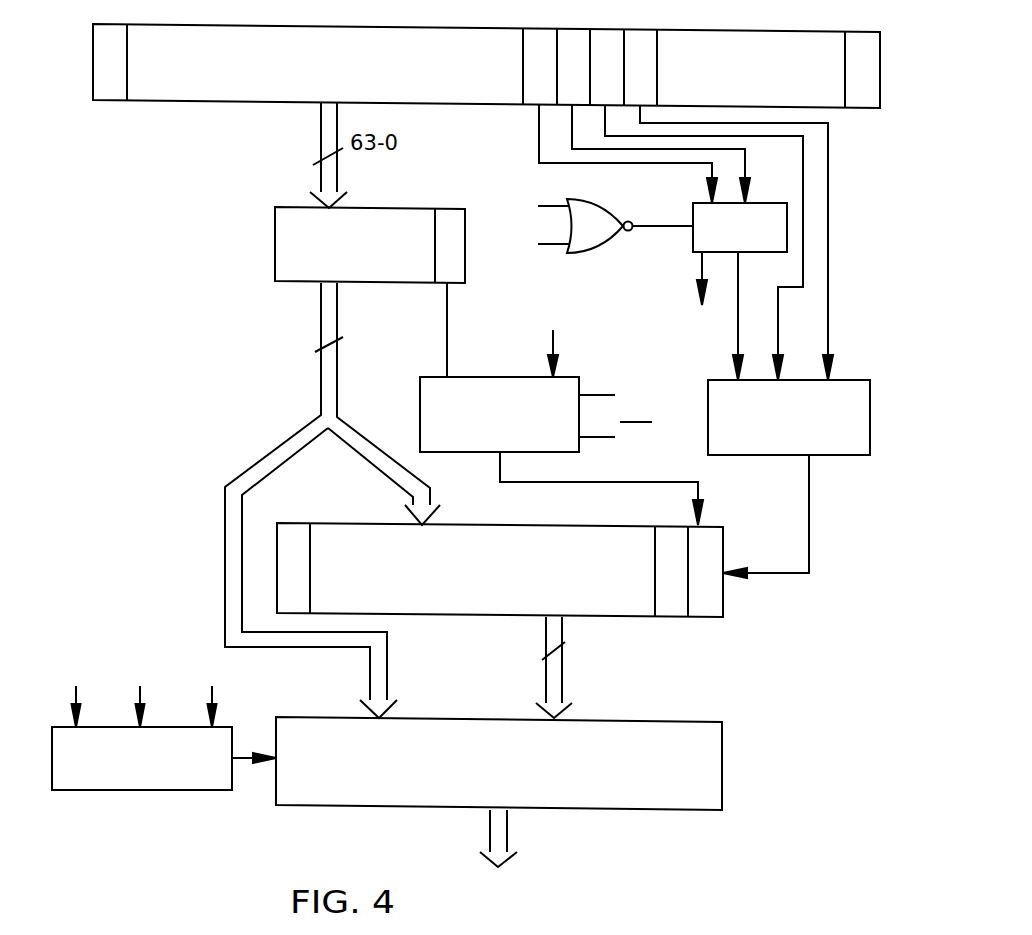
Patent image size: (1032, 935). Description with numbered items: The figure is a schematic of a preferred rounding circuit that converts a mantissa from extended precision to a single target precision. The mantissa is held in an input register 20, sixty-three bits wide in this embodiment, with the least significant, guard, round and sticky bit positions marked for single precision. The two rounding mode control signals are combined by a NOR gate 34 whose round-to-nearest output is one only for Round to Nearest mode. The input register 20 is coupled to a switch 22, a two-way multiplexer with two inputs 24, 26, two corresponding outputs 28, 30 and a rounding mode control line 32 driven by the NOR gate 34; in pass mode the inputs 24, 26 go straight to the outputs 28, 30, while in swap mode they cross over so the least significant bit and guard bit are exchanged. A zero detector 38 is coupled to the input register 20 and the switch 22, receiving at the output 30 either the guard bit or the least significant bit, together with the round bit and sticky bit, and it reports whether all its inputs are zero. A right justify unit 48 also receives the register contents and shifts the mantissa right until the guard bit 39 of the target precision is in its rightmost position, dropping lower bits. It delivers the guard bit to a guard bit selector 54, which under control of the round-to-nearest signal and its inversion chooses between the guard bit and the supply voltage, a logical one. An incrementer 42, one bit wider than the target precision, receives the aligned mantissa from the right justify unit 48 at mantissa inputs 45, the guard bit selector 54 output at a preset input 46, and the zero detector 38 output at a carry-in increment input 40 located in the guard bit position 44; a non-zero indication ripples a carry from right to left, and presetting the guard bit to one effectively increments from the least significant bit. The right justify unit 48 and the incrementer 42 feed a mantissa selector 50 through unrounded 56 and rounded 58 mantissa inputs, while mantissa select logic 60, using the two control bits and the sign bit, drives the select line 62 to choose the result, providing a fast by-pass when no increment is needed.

The input register 20 is at (727, 31).
The switch 22 is at (763, 203).
The switch input 24 is at (539, 125).
The switch input 26 is at (572, 140).
The switch output 28 is at (700, 270).
The switch output 30 is at (738, 325).
The rounding mode control line 32 is at (666, 228).
The NOR gate 34 is at (605, 250).
The zero detector 38 is at (788, 455).
The guard bit 39 is at (447, 307).
The carry-in increment input 40 is at (812, 520).
The incrementer 42 is at (277, 573).
The guard bit position 44 is at (705, 607).
The mantissa inputs 45 is at (433, 497).
The preset input 46 is at (573, 483).
The right justify unit 48 is at (275, 250).
The mantissa selector 50 is at (722, 763).
The guard bit selector 54 is at (465, 377).
The unrounded mantissa input 56 is at (388, 677).
The rounded mantissa input 58 is at (565, 680).
The mantissa select logic 60 is at (135, 790).
The select line of mantissa selector 62 is at (238, 760).